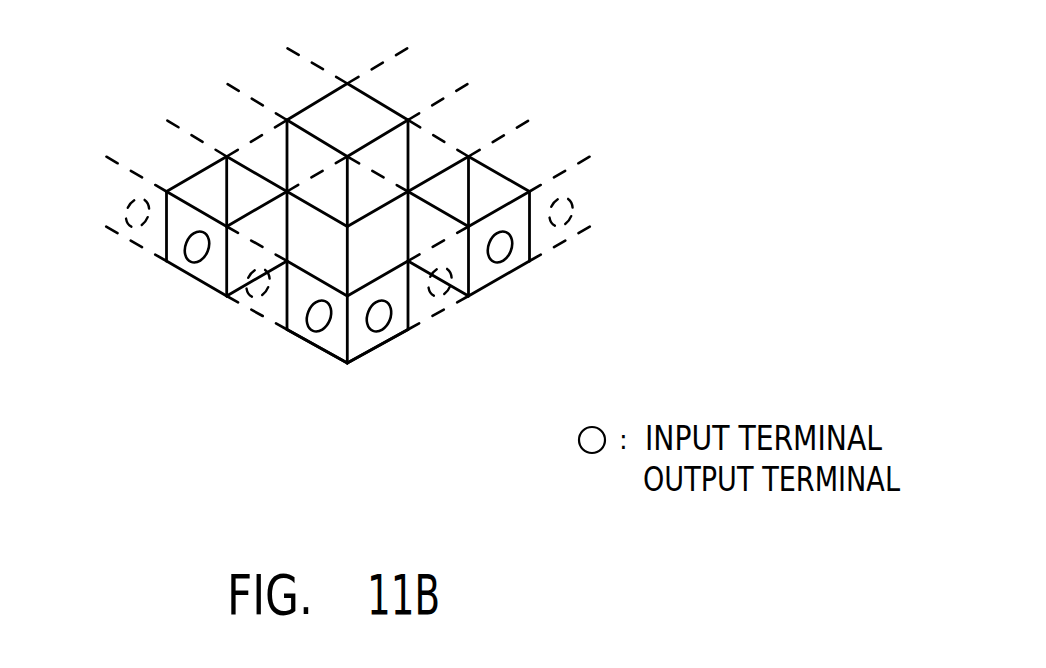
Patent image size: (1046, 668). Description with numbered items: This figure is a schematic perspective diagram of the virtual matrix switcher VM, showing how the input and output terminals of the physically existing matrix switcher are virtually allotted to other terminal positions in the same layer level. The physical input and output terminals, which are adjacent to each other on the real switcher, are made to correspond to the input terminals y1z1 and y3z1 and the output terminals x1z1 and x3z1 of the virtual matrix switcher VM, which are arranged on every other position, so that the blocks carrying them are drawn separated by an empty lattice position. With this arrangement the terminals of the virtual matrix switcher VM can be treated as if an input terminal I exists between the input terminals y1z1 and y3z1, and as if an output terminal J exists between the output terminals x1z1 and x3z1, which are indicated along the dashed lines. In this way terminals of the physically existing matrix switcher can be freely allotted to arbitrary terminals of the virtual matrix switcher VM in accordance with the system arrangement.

The virtual matrix switcher VM is at (95, 62).
The output terminal (X3, Z1) x3z1 is at (198, 279).
The input terminal (Y3, Z1) y3z1 is at (511, 267).
The output terminal (X1, Z1) x1z1 is at (322, 339).
The input terminal (Y1, Z1) y1z1 is at (376, 337).
The output terminal J is at (274, 311).
The input terminal I is at (433, 313).